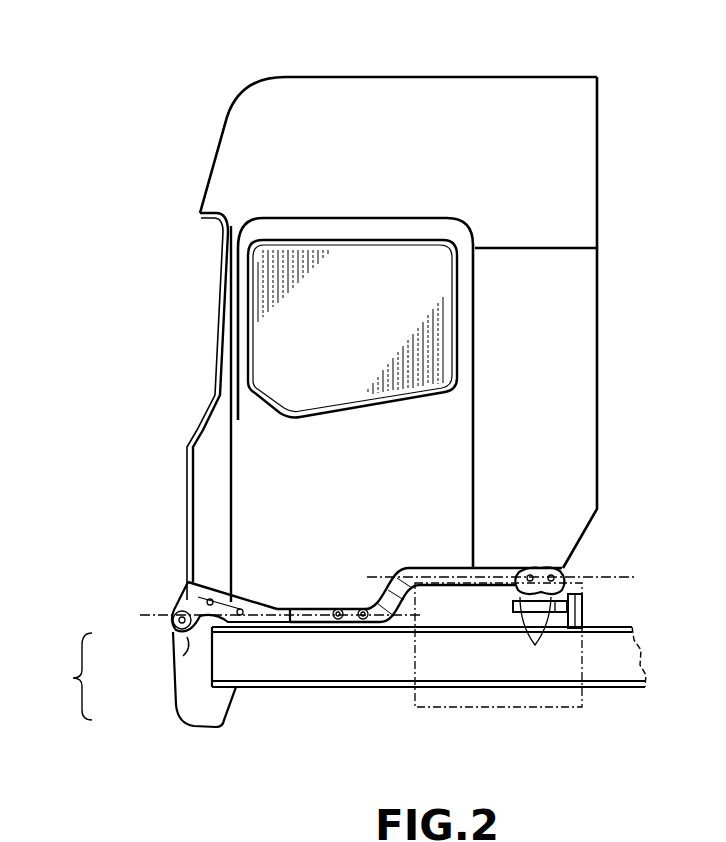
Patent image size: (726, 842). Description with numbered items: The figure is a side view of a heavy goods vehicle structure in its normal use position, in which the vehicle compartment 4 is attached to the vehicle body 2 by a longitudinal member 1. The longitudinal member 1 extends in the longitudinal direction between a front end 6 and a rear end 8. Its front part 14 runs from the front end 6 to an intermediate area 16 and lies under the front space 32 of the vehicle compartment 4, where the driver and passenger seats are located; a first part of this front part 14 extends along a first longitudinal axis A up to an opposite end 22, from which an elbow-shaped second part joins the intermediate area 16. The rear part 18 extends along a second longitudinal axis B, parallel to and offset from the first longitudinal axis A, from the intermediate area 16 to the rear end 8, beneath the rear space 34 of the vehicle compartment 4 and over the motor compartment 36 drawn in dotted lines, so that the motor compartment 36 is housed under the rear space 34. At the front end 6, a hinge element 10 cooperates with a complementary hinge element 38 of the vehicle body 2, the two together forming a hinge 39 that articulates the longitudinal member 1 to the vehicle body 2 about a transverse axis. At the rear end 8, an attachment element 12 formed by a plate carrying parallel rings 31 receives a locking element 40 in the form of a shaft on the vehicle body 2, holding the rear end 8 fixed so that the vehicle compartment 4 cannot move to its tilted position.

The longitudinal member 1 is at (445, 568).
The vehicle body 2 is at (292, 670).
The vehicle compartment 4 is at (581, 156).
The front end 6 is at (187, 583).
The rear end 8 is at (563, 582).
The hinge element 10 is at (172, 630).
The attachment element 12 is at (535, 571).
The front part 14 is at (323, 628).
The intermediate area 16 is at (448, 587).
The rear part 18 is at (485, 589).
The opposite end 22 is at (353, 625).
The parallel rings 31 is at (535, 635).
The front space 32 is at (270, 348).
The rear space 34 is at (567, 367).
The motor compartment 36 is at (552, 708).
The complementary hinge element 38 is at (187, 638).
The hinge 39 is at (68, 676).
The locking element 40 is at (565, 613).
The first longitudinal axis A is at (148, 615).
The second longitudinal axis B is at (608, 577).